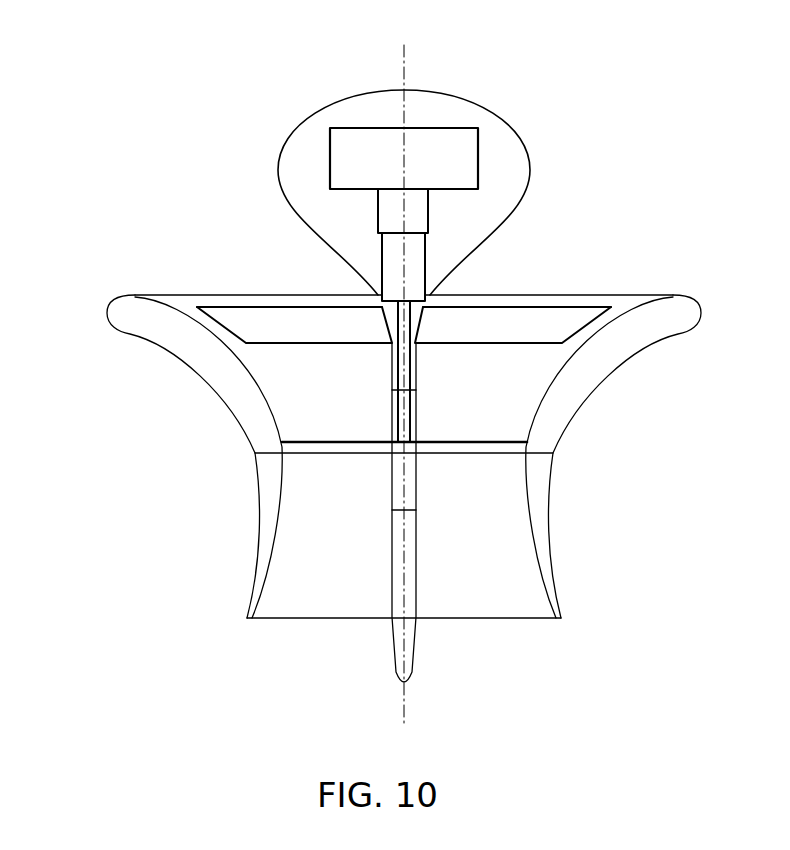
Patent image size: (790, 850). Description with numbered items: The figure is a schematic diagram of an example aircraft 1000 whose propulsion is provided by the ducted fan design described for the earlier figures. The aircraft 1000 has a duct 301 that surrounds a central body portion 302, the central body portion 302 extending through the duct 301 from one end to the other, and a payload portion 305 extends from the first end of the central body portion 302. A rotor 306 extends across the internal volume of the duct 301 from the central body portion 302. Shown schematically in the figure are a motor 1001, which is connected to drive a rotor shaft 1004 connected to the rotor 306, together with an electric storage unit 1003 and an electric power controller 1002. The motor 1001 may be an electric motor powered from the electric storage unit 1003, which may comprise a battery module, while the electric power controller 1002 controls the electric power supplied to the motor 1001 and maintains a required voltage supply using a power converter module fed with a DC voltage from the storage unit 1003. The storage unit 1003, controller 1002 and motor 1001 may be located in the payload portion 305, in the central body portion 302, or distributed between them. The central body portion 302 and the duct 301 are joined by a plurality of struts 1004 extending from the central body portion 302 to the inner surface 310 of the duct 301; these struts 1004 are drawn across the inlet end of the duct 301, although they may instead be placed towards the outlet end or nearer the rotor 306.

The aircraft 1000 is at (180, 56).
The payload portion 305 is at (527, 129).
The electric storage unit 1003 is at (328, 160).
The electric power controller 1002 is at (378, 205).
The motor 1001 is at (428, 250).
The duct 301 is at (234, 396).
The inner surface of the duct 310 is at (268, 393).
The struts 1004 is at (578, 308).
The central body portion 302 is at (420, 367).
The rotor 306 is at (458, 454).